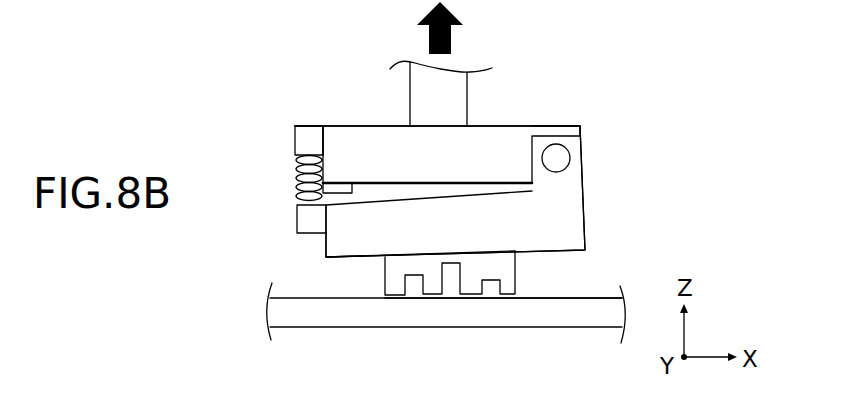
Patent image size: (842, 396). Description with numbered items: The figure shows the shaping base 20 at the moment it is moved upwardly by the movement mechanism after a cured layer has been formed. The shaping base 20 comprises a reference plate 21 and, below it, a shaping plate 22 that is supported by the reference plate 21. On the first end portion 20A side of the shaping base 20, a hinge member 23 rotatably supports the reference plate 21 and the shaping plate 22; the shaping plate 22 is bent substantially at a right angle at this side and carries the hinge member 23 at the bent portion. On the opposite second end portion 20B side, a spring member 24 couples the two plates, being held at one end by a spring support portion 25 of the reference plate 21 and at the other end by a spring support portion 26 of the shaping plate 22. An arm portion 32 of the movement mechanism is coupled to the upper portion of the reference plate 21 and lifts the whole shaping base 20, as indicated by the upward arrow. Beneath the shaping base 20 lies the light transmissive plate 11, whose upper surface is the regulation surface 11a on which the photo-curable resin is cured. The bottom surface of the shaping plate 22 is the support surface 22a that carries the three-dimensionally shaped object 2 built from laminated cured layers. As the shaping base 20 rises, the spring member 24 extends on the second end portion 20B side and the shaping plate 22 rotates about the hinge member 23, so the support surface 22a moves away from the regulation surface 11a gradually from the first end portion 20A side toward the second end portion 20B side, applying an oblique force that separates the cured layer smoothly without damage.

The shaping base 20 is at (645, 91).
The first end portion 20A is at (580, 126).
The second end portion 20B is at (292, 125).
The reference plate 21 is at (500, 137).
The shaping plate 22 is at (572, 217).
The support surface 22a is at (358, 259).
The hinge member 23 is at (557, 158).
The spring member 24 is at (299, 178).
The spring support portion 25 is at (300, 140).
The spring support portion 26 is at (302, 218).
The arm portion 32 is at (420, 90).
The three-dimensionally shaped object 2 is at (472, 284).
The light transmissive plate 11 is at (356, 320).
The regulation surface 11a is at (548, 298).